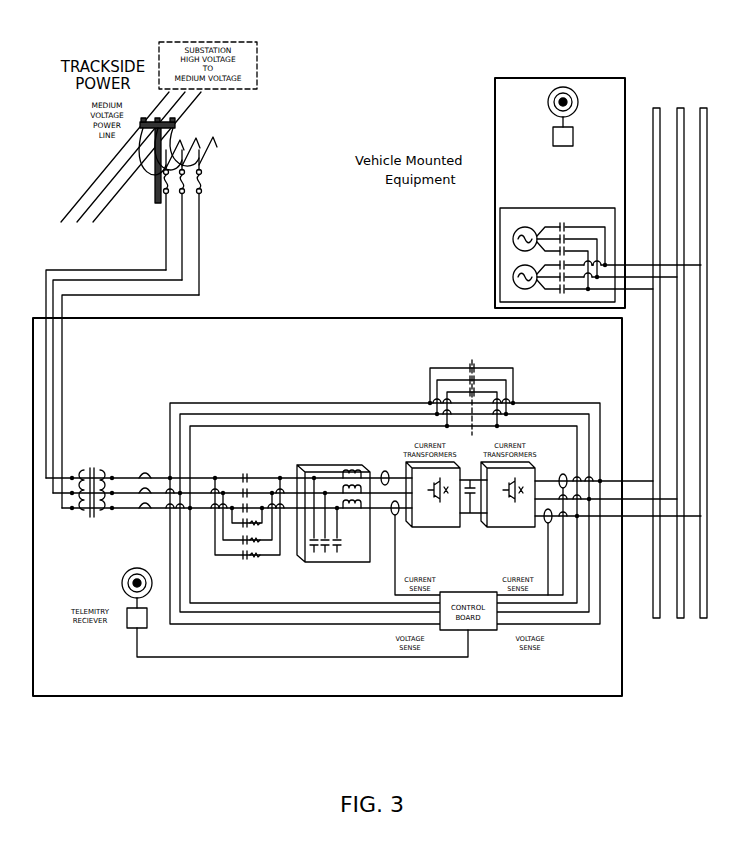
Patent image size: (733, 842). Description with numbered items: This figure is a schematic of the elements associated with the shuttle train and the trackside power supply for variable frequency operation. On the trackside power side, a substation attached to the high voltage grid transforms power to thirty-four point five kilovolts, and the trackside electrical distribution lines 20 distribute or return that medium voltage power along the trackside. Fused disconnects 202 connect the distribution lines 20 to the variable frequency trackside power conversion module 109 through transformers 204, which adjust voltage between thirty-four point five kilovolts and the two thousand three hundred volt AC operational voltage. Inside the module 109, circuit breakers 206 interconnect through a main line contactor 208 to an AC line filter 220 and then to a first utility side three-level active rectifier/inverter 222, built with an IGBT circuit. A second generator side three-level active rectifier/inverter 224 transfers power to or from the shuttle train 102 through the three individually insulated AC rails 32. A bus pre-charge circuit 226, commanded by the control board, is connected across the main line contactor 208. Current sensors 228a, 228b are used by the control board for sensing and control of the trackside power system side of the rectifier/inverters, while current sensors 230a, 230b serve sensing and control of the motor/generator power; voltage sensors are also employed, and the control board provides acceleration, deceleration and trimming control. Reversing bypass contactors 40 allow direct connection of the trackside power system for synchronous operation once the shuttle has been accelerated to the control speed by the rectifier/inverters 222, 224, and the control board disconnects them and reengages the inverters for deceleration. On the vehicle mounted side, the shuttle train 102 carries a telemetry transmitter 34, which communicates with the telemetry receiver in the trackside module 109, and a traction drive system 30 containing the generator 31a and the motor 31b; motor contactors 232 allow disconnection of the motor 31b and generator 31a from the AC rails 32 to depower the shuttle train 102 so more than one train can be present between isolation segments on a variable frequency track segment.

The trackside electrical distribution lines 20 is at (102, 172).
The fused disconnects 202 is at (202, 168).
The shuttle train 102 is at (567, 78).
The telemetry transmitter 34 is at (548, 137).
The motor contactors 232 is at (568, 222).
The AC rails 32 is at (675, 76).
The generator 31a is at (513, 237).
The motor 31b is at (513, 275).
The traction drive system 30 is at (505, 283).
The variable frequency trackside power conversion module 109 is at (538, 696).
The transformers 204 is at (90, 470).
The circuit breakers 206 is at (145, 512).
The main line contactor 208 is at (230, 478).
The bus pre-charge circuit 226 is at (235, 563).
The AC line filter 220 is at (313, 562).
The current sensor 228a is at (385, 471).
The current sensor 228b is at (395, 516).
The first utility side 3-level active rectifier/inverter 222 is at (412, 505).
The second generator side 3-level active rectifier/inverter 224 is at (528, 473).
The current sensor 230a is at (562, 474).
The current sensor 230b is at (550, 524).
The reversing bypass contactors 40 is at (430, 390).